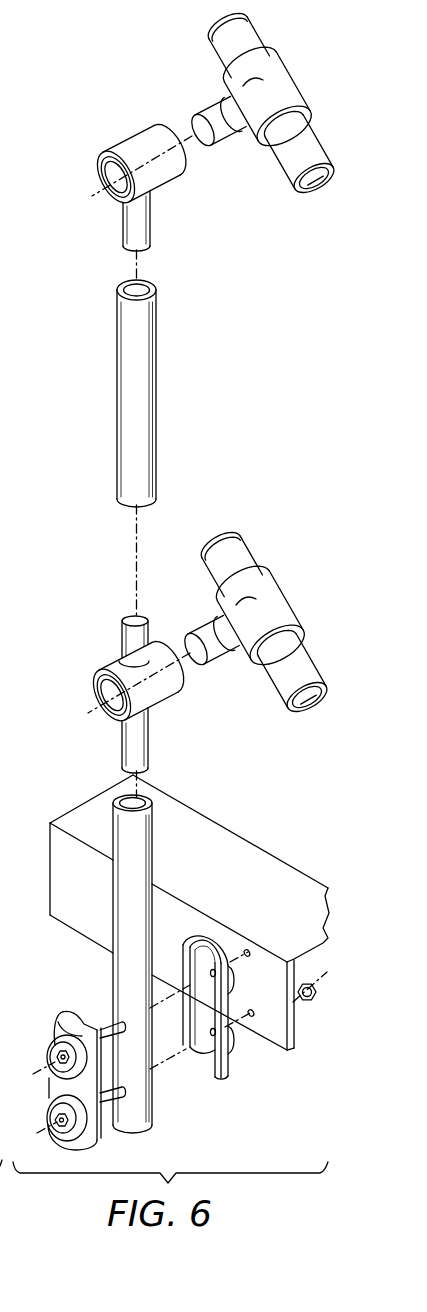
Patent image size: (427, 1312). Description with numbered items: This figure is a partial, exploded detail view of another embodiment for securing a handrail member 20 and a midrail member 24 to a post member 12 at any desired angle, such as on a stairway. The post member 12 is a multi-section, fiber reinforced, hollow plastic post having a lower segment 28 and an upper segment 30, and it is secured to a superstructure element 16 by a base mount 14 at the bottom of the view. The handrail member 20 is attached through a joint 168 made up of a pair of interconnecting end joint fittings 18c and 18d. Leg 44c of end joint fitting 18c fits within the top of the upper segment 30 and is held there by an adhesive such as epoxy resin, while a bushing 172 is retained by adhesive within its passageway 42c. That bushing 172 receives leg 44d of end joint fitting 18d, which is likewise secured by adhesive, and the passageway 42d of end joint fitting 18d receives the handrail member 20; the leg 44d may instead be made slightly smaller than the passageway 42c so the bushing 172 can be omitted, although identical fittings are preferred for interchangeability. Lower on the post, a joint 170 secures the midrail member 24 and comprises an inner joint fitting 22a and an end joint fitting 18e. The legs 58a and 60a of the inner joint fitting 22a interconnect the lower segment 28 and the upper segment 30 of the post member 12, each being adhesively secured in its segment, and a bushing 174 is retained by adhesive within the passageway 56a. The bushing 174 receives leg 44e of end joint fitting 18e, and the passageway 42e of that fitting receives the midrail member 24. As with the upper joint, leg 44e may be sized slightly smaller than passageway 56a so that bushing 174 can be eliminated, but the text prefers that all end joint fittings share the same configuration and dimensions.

The post member 12 is at (230, 415).
The base mount 14 is at (190, 1092).
The superstructure element 16 is at (240, 893).
The end joint fitting 18c is at (98, 145).
The end joint fitting 18d is at (297, 63).
The end joint fitting 18e is at (296, 601).
The handrail member 20 is at (247, 37).
The inner joint fitting 22a is at (75, 671).
The midrail member 24 is at (288, 675).
The lower segment 28 is at (125, 930).
The upper segment 30 is at (128, 410).
The passageway 42c is at (99, 183).
The passageway 42d is at (303, 109).
The passageway 42e is at (302, 642).
The leg 44c is at (108, 233).
The leg 44d is at (237, 149).
The leg 44e is at (237, 660).
The passageway 56a is at (106, 716).
The leg 58a is at (115, 641).
The leg 60a is at (115, 725).
The joint 168 is at (118, 83).
The joint 170 is at (161, 606).
The bushing 172 is at (122, 162).
The bushing 174 is at (96, 695).